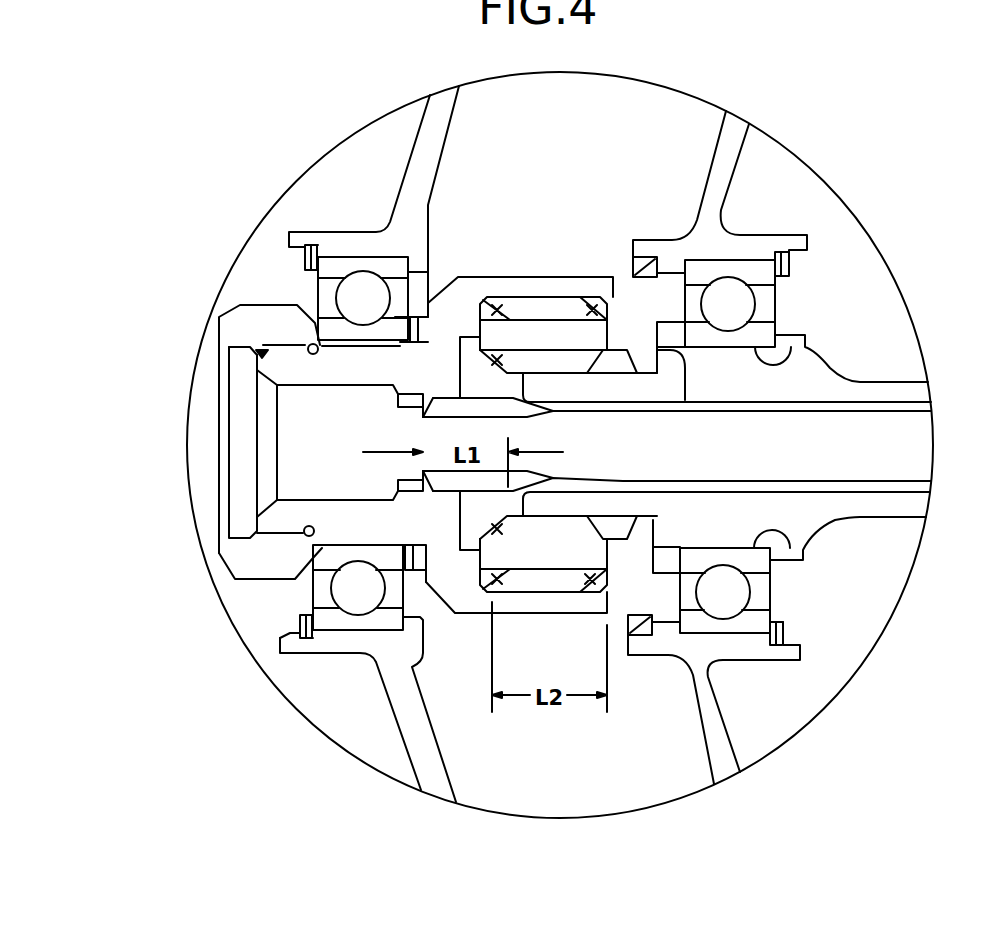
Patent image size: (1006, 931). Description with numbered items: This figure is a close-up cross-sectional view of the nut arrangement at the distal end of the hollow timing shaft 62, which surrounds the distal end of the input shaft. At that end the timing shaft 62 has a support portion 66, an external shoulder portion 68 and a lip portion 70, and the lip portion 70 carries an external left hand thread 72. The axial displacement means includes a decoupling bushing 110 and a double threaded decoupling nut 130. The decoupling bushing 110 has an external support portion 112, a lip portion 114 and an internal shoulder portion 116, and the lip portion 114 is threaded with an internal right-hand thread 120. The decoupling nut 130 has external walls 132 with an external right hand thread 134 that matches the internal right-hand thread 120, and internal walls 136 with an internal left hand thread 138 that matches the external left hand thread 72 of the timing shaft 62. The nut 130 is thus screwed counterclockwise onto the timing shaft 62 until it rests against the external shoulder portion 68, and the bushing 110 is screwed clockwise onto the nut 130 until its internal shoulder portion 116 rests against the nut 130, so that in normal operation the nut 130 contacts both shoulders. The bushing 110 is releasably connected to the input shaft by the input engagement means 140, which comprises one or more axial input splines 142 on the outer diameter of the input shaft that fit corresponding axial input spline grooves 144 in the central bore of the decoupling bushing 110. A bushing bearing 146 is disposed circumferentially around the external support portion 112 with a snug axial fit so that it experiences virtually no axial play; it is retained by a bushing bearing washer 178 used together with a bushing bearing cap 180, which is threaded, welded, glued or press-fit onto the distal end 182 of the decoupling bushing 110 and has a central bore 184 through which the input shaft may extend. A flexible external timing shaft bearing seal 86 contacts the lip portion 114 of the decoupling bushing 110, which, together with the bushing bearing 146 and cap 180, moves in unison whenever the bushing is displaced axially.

The hollow timing shaft 62 is at (910, 397).
The support portion 66 is at (720, 358).
The external shoulder portion 68 is at (672, 332).
The lip portion 70 is at (613, 390).
The external left hand thread 72 is at (685, 408).
The flexible external timing shaft bearing seal 86 is at (720, 202).
The decoupling bushing 110 is at (313, 518).
The external support portion 112 is at (290, 330).
The lip portion 114 is at (604, 276).
The internal shoulder portion 116 is at (467, 303).
The internal right-hand thread 120 is at (628, 258).
The double threaded decoupling nut 130 is at (593, 338).
The external walls 132 is at (512, 305).
The external right hand thread 134 is at (548, 297).
The internal walls 136 is at (505, 358).
The internal left hand thread 138 is at (462, 352).
The input engagement means 140 is at (347, 518).
The axial input splines 142 is at (476, 482).
The axial input spline grooves 144 is at (428, 493).
The bushing bearing 146 is at (332, 268).
The bushing bearing washer 178 is at (427, 265).
The bushing bearing cap 180 is at (245, 330).
The distal end 182 is at (282, 373).
The central bore 184 is at (211, 444).